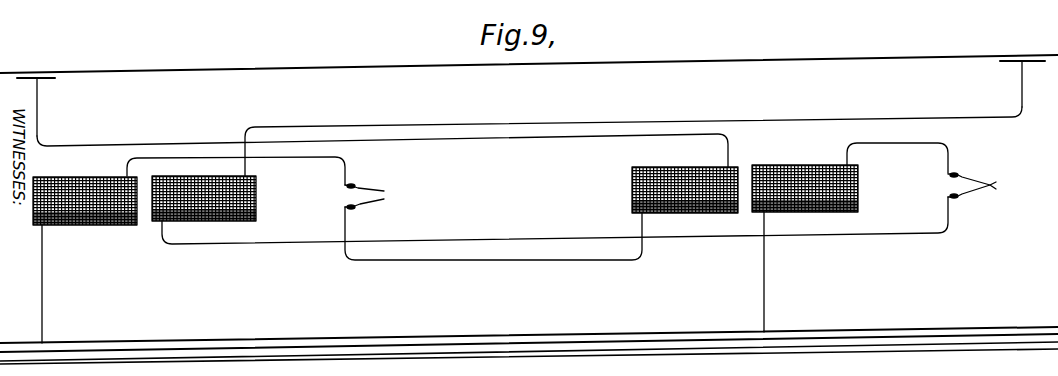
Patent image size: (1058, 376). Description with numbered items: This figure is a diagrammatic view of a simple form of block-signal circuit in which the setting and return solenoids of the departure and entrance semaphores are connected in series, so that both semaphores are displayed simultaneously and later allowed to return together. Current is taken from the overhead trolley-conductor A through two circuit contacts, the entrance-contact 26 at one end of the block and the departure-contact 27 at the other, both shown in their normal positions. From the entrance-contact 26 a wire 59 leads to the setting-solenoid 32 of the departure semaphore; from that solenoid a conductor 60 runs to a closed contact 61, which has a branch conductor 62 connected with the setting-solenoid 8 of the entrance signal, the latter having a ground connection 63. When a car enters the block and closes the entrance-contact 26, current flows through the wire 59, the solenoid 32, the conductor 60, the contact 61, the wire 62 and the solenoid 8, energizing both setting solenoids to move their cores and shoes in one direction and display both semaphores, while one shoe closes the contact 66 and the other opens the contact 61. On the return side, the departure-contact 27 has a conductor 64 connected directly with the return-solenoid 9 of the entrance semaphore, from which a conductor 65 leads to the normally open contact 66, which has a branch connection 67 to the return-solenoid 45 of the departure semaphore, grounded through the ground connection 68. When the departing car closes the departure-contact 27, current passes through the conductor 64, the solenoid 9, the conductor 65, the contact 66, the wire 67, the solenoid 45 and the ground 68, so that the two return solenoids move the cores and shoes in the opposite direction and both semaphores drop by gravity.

The overhead trolley-conductor A is at (350, 69).
The departure-contact 27 is at (55, 80).
The entrance-contact 26 is at (1037, 64).
The conductor 64 is at (147, 145).
The wire 59 is at (625, 126).
The branch connection 67 is at (288, 158).
The normally open contact 66 is at (364, 186).
The conductor 65 is at (476, 262).
The conductor 60 is at (440, 241).
The branch conductor 62 is at (898, 143).
The closed contact 61 is at (972, 197).
The ground connection 68 is at (44, 298).
The ground connection 63 is at (766, 285).
The return-solenoid of the departure-semaphore 45 is at (80, 226).
The setting-solenoid of the departure-semaphore 32 is at (252, 219).
The return-solenoid of the entrance-semaphore 9 is at (685, 179).
The setting-solenoid of the entrance-signal 8 is at (790, 164).